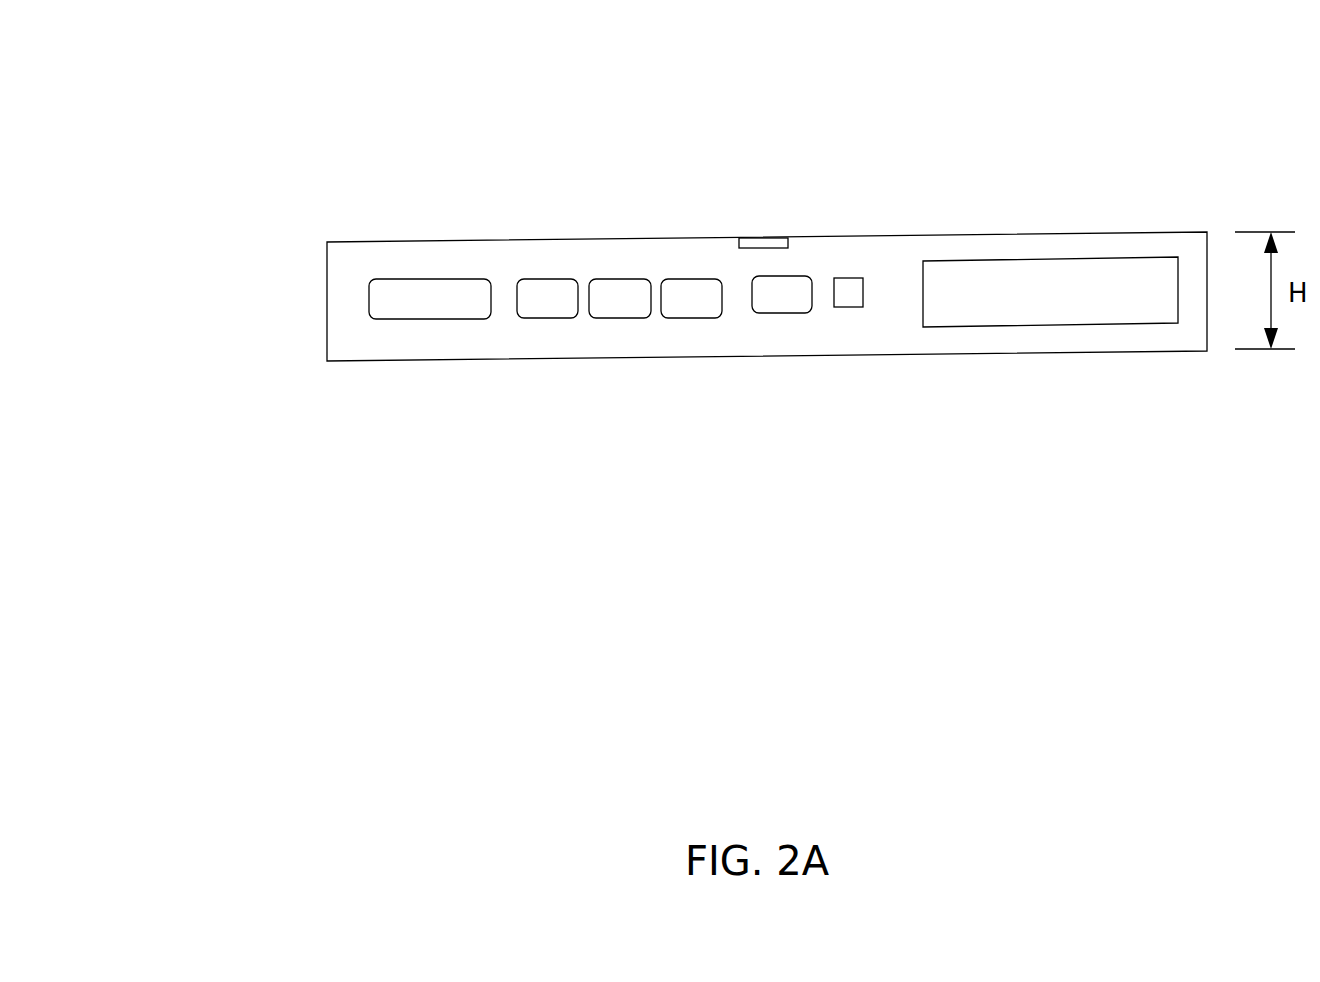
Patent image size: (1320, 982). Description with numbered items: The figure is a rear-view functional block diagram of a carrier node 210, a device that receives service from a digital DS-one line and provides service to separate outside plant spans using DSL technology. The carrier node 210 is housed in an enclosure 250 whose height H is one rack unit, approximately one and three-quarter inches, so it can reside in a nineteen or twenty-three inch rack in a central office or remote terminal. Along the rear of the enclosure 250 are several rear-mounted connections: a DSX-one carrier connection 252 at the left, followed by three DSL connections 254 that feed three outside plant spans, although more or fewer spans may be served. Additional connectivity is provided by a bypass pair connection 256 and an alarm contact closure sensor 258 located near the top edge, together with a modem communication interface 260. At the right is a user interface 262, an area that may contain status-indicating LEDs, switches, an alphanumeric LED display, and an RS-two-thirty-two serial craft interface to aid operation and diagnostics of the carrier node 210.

The carrier node 210 is at (279, 130).
The enclosure 250 is at (1183, 233).
The DSX-1 carrier connection 252 is at (427, 270).
The DSL connections 254 is at (706, 372).
The bypass pair connection 256 is at (782, 313).
The alarm contact closure sensor 258 is at (760, 237).
The modem communication interface 260 is at (837, 278).
The user interface 262 is at (1055, 333).